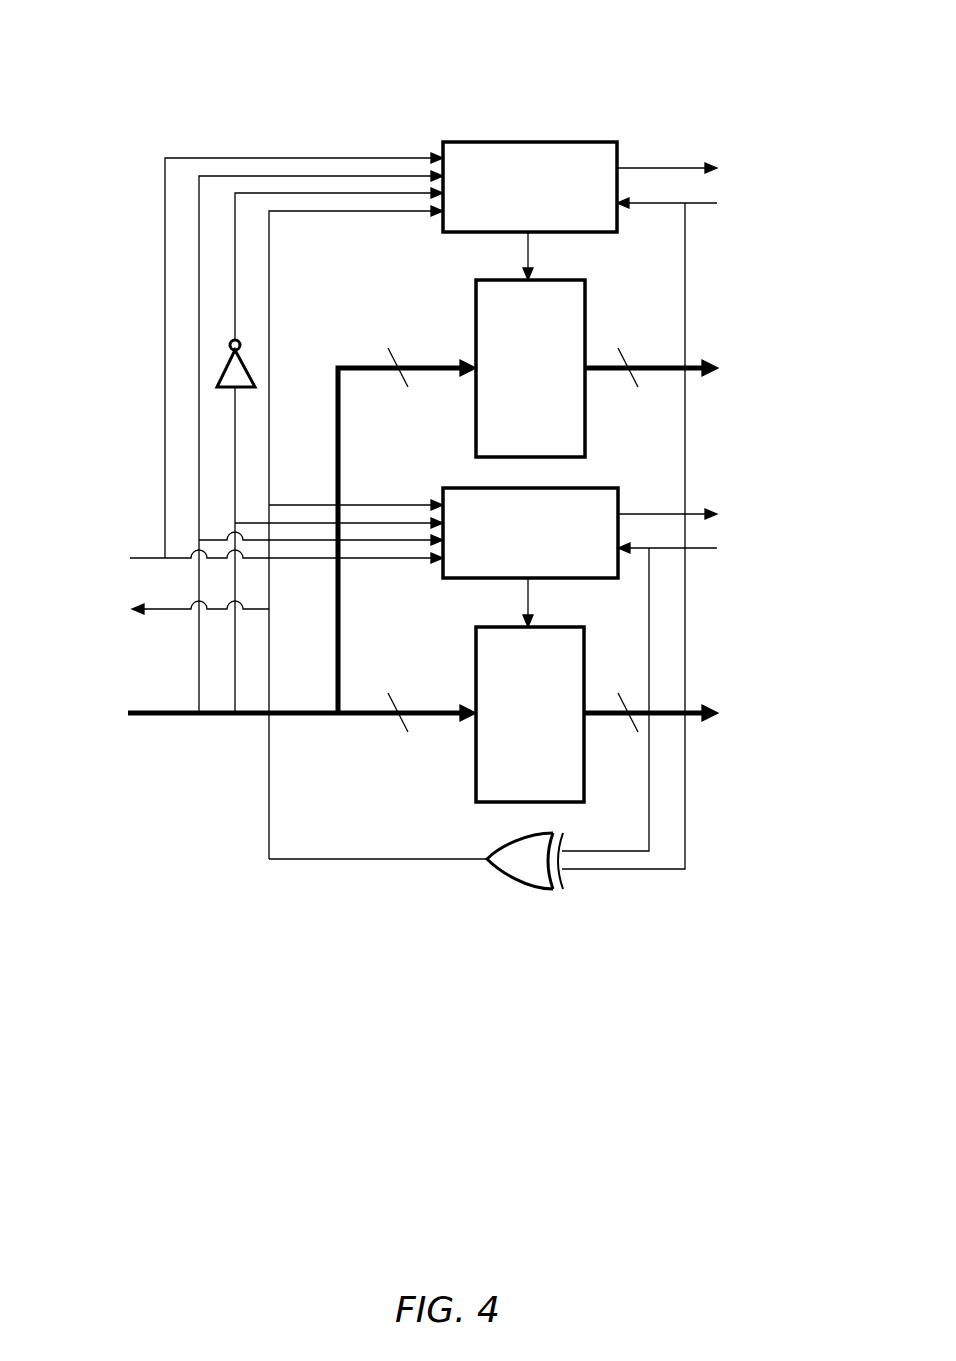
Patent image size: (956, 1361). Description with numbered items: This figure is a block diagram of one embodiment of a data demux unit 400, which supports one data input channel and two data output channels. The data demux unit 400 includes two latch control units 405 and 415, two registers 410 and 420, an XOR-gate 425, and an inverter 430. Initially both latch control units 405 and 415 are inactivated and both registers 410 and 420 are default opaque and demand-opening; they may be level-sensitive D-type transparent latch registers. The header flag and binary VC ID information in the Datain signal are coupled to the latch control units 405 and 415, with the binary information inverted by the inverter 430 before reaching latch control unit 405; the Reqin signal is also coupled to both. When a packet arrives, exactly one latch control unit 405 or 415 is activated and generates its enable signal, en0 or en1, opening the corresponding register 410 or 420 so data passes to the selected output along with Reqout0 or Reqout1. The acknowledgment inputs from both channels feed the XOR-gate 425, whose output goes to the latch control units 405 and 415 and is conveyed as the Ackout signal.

The data demux unit 400 is at (676, 69).
The latch control unit 405 is at (530, 187).
The register 410 is at (530, 368).
The latch control unit 415 is at (530, 533).
The register 420 is at (530, 714).
The XOR-gate 425 is at (522, 890).
The inverter 430 is at (217, 377).